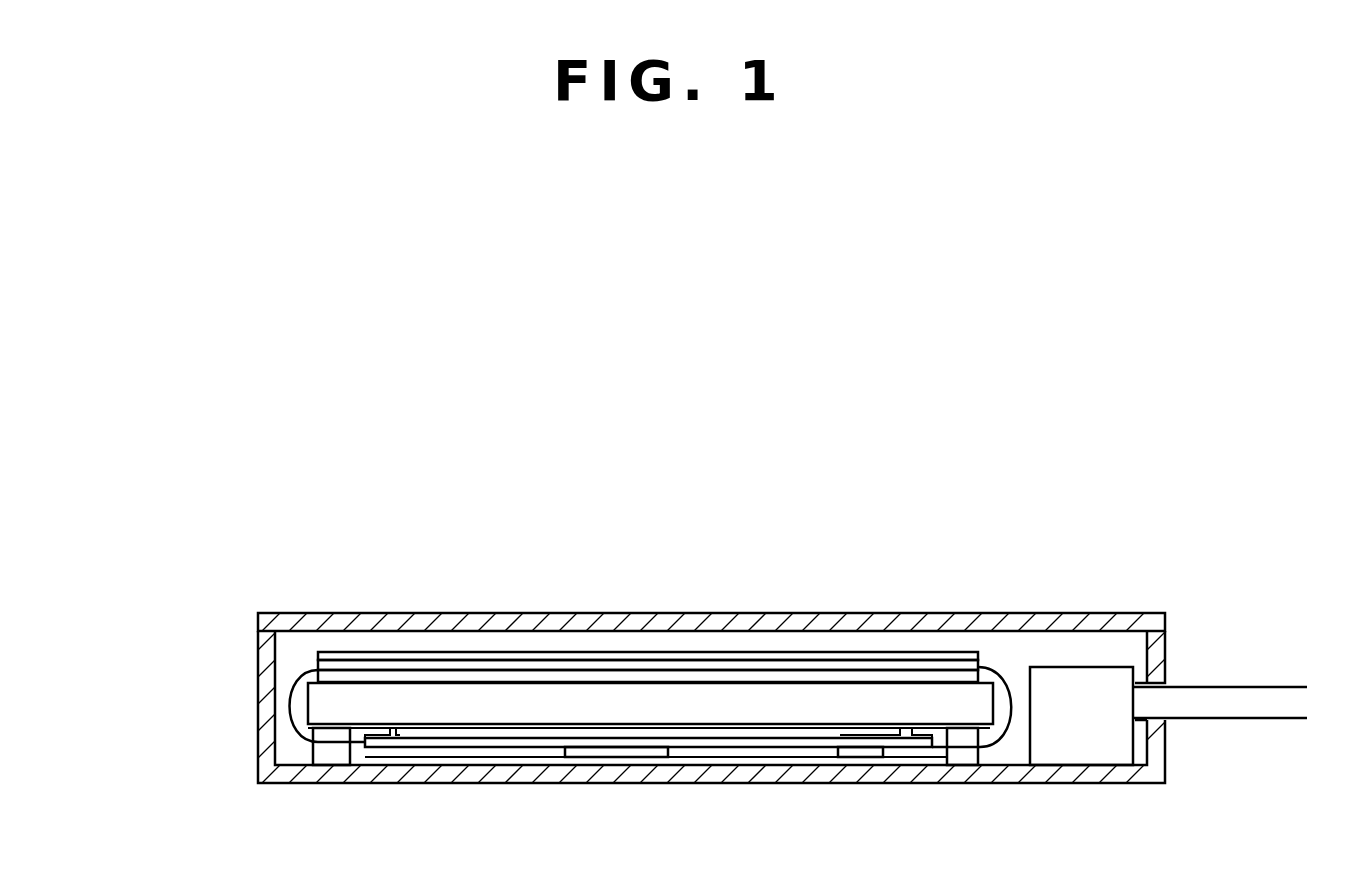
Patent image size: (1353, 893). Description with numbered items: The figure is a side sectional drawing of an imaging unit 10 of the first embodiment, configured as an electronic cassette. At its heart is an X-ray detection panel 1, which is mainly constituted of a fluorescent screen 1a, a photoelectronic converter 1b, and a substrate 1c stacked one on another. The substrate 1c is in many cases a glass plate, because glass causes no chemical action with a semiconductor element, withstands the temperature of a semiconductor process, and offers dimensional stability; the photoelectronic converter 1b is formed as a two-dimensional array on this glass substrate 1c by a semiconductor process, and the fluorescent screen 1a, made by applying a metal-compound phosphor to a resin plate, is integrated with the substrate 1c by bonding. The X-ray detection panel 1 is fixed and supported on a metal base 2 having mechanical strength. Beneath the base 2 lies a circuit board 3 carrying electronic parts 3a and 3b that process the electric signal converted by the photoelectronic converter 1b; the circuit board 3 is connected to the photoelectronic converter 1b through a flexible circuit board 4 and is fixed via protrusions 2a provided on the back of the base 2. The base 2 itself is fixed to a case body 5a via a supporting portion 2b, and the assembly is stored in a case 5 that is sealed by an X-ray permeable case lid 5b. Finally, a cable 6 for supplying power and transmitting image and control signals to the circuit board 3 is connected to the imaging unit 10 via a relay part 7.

The X-ray detection panel 1 is at (748, 545).
The fluorescent screen 1a is at (580, 655).
The photoelectronic converter 1b is at (643, 667).
The substrate 1c is at (725, 678).
The base 2 is at (730, 705).
The protrusions 2a is at (392, 740).
The supporting portion 2b is at (338, 755).
The circuit board 3 is at (490, 742).
The electronic part 3a is at (598, 757).
The electronic part 3b is at (862, 757).
The flexible circuit board 4 is at (268, 730).
The case 5 is at (168, 550).
The case body 5a is at (264, 685).
The case lid 5b is at (259, 614).
The cable 6 is at (1193, 705).
The relay part 7 is at (1070, 743).
The imaging unit 10 is at (1012, 584).